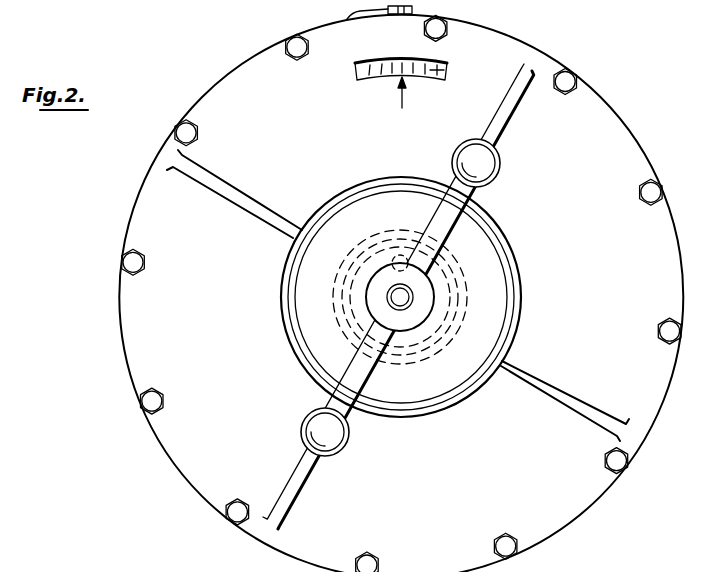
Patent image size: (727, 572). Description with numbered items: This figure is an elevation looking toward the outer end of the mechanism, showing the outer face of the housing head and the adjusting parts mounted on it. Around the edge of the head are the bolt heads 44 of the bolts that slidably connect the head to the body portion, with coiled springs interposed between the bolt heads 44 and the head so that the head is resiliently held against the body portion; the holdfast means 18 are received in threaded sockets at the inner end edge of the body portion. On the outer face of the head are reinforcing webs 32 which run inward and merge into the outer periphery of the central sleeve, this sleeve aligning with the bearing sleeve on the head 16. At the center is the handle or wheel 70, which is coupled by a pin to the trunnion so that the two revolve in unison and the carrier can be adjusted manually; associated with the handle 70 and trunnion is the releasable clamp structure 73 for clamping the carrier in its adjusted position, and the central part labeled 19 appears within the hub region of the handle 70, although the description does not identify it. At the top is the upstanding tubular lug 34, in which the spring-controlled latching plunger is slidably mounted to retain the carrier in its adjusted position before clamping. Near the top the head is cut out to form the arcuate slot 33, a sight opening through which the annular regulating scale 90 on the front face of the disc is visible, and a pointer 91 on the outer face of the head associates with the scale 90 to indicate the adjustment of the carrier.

The head 16 is at (412, 297).
The holdfast means 18 is at (466, 200).
The hub 19 is at (418, 316).
The reinforcing webs 32 is at (244, 200).
The arcuate slot 33 is at (388, 58).
The tubular lug 34 is at (347, 22).
The bolt heads 44 is at (578, 80).
The handle or wheel 70 is at (437, 392).
The releasable clamp structure 73 is at (434, 228).
The annular regulating scale 90 is at (447, 70).
The pointer 91 is at (399, 103).